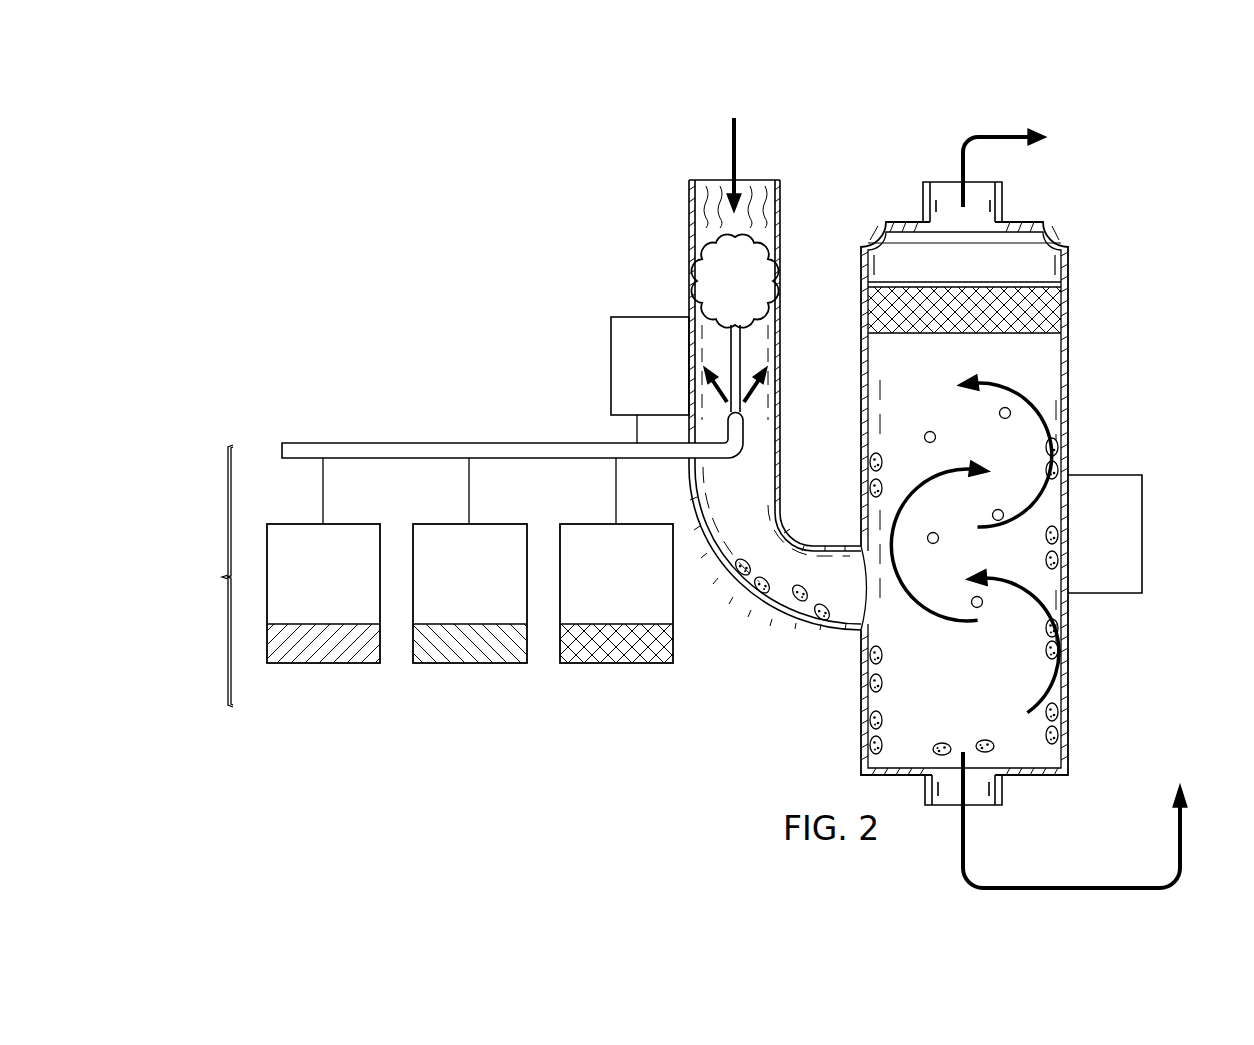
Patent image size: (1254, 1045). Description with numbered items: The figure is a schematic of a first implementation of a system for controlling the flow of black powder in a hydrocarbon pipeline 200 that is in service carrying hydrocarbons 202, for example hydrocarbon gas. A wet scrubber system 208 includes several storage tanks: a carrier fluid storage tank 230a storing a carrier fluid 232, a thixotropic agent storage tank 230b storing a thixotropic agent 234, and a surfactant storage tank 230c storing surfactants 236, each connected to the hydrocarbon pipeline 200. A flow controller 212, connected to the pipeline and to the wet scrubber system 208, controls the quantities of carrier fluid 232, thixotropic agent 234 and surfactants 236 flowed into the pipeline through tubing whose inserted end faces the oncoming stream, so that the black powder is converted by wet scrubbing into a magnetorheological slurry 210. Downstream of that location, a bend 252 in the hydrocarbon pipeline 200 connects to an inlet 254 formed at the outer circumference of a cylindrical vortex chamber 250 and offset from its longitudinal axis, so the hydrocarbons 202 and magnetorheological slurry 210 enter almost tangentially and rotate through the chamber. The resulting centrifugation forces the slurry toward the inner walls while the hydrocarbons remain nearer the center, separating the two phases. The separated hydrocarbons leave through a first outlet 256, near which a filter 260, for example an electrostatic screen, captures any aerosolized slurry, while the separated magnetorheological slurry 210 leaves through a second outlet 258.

The hydrocarbon pipeline 200 is at (688, 212).
The hydrocarbons 202 is at (712, 188).
The wet scrubber system 208 is at (204, 576).
The magnetorheological slurry 210 is at (700, 264).
The flow controller 212 is at (611, 360).
The carrier fluid storage tank 230a is at (285, 533).
The thixotropic agent storage tank 230b is at (430, 533).
The surfactant storage tank 230c is at (577, 533).
The carrier fluid 232 is at (323, 657).
The thixotropic agent 234 is at (475, 657).
The surfactants 236 is at (620, 657).
The vortex chamber 250 is at (1068, 368).
The bend 252 is at (755, 619).
The inlet 254 is at (849, 550).
The first outlet 256 is at (936, 195).
The second outlet 258 is at (995, 798).
The filter 260 is at (928, 334).